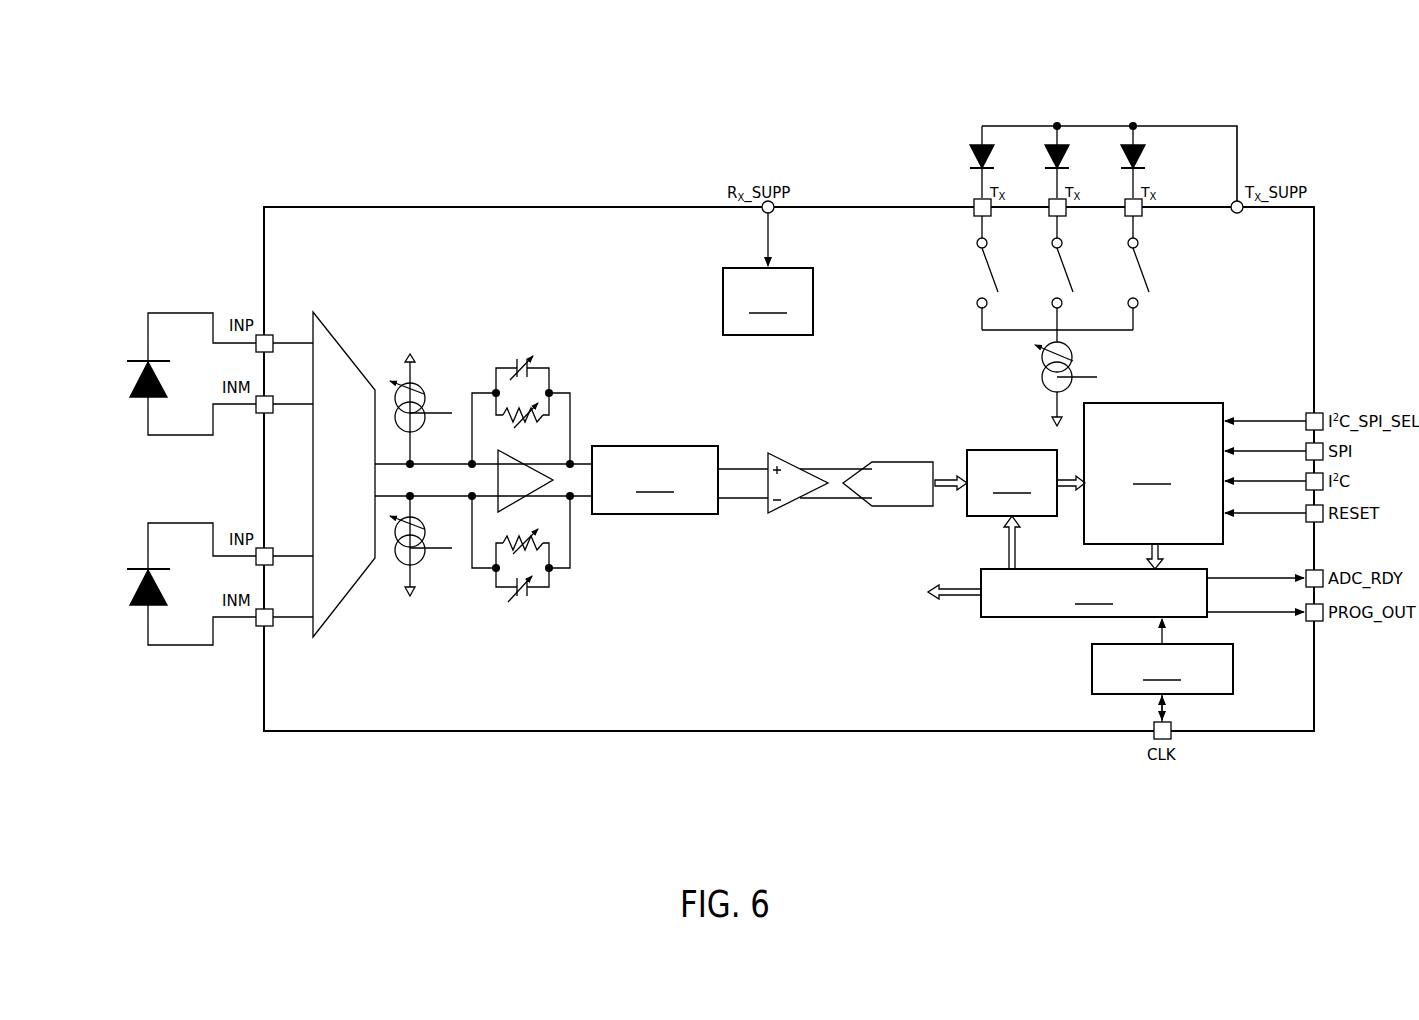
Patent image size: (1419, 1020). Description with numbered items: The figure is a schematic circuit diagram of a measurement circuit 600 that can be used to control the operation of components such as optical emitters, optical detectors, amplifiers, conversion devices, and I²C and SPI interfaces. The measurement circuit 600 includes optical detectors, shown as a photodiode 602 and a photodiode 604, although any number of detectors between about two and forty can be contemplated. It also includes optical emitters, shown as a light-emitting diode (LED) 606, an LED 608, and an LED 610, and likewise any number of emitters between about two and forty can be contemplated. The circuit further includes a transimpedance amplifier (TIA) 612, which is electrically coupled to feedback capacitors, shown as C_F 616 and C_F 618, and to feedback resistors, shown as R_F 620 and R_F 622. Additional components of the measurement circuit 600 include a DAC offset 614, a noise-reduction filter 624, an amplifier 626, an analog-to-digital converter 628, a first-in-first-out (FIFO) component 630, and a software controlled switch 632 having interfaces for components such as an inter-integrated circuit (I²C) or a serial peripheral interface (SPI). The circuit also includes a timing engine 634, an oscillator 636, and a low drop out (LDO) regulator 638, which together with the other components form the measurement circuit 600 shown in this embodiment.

The measurement circuit 600 is at (306, 113).
The photodiode 602 is at (140, 372).
The photodiode 604 is at (140, 584).
The light-emitting diode 606 is at (976, 142).
The LED 608 is at (1052, 142).
The LED 610 is at (1128, 142).
The transimpedance amplifier 612 is at (497, 478).
The DAC offset 614 is at (410, 332).
The feedback capacitor 616 is at (534, 356).
The feedback capacitor 618 is at (528, 596).
The feedback resistor 620 is at (542, 402).
The feedback resistor 622 is at (542, 548).
The noise-reduction filter 624 is at (655, 480).
The amplifier 626 is at (770, 512).
The analog-to-digital converter 628 is at (893, 507).
The first-in-first-out component 630 is at (1012, 483).
The software controlled switch 632 is at (1153, 473).
The timing engine 634 is at (1094, 593).
The oscillator 636 is at (1162, 669).
The low drop out regulator 638 is at (768, 274).